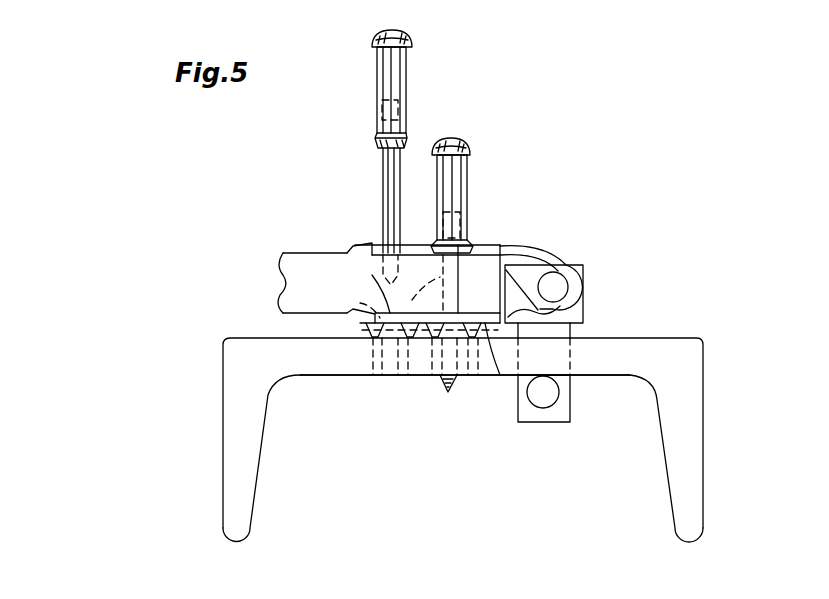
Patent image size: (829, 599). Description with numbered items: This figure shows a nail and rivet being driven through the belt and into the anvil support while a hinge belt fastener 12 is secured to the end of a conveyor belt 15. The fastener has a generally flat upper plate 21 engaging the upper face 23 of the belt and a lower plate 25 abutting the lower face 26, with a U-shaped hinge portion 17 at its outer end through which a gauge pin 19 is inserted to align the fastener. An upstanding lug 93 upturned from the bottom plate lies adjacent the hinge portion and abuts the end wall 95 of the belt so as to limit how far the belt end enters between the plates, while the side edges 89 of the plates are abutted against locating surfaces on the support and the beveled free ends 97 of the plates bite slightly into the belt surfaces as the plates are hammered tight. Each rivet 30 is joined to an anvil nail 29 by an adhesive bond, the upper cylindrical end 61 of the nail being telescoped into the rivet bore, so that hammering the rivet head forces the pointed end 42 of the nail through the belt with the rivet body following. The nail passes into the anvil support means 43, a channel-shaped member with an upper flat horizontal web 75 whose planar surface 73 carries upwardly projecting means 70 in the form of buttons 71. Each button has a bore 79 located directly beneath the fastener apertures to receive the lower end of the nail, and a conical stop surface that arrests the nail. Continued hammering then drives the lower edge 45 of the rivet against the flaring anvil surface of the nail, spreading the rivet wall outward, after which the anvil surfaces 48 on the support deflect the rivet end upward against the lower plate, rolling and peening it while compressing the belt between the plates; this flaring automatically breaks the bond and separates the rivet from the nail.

The hinge belt fastener 12 is at (556, 266).
The conveyor belt 15 is at (287, 288).
The U-shaped hinge pin receiving portion 17 is at (577, 282).
The gauge pin 19 is at (560, 278).
The upper plate 21 is at (492, 245).
The upper face of the belt 23 is at (295, 253).
The lower plate 25 is at (499, 376).
The lower face of the belt 26 is at (283, 318).
The anvil nail 29 is at (382, 182).
The rivet 30 is at (408, 82).
The pointed end of the nail 42 is at (447, 395).
The anvil support means 43 is at (477, 415).
The lower edge of the rivet 45 is at (468, 240).
The anvil surfaces 48 is at (378, 305).
The upper cylindrical end of the anvil nail 61 is at (462, 235).
The upwardly projecting means 70 is at (362, 330).
The button 71 is at (373, 340).
The planar surface of the anvil means 73 is at (603, 338).
The upper horizontal web 75 is at (608, 375).
The bore 79 is at (367, 343).
The side edge 89 is at (418, 242).
The upstanding lug 93 is at (485, 306).
The end wall of the belt 95 is at (520, 253).
The beveled free end 97 is at (357, 247).